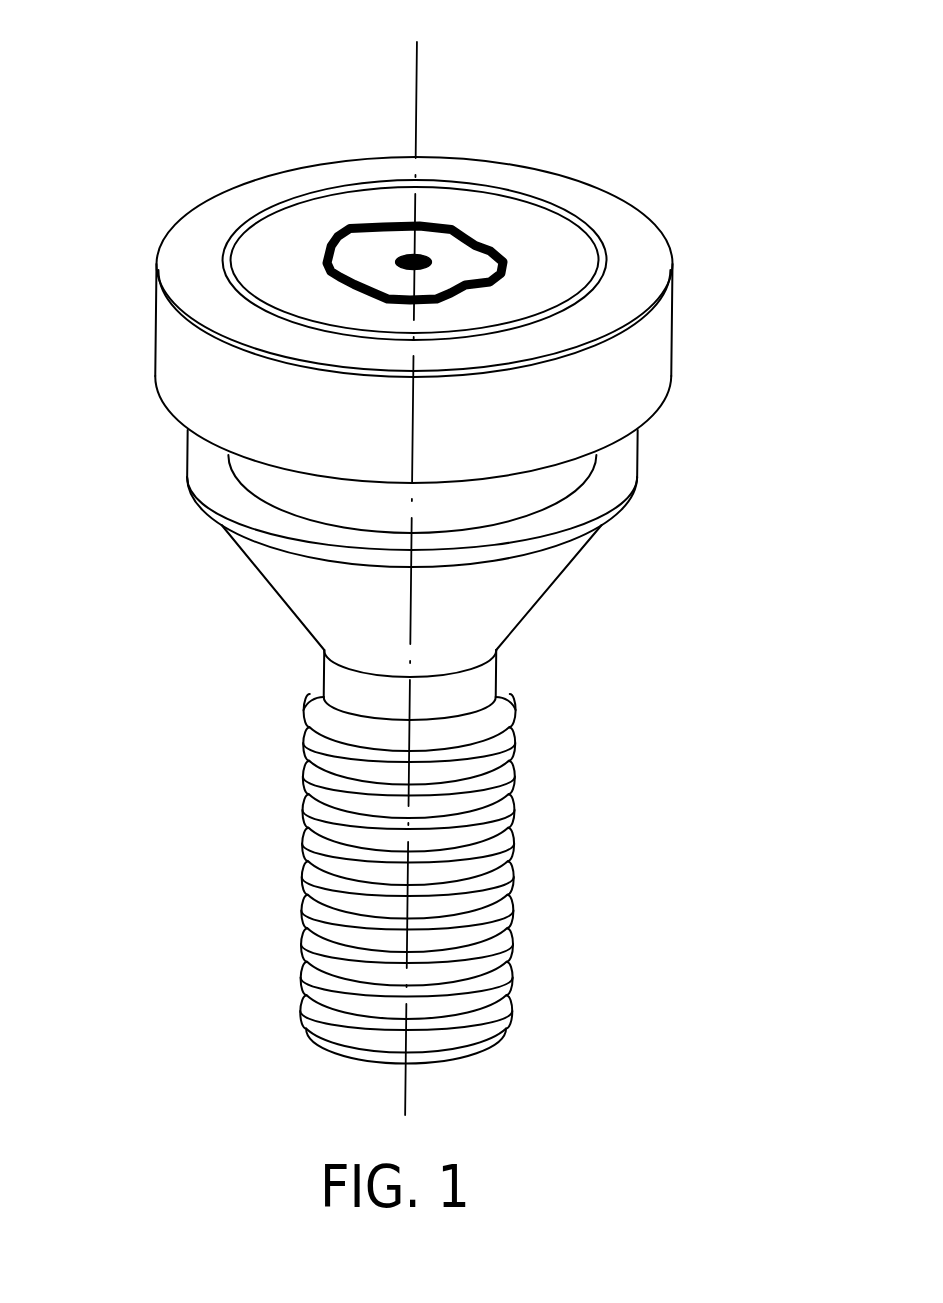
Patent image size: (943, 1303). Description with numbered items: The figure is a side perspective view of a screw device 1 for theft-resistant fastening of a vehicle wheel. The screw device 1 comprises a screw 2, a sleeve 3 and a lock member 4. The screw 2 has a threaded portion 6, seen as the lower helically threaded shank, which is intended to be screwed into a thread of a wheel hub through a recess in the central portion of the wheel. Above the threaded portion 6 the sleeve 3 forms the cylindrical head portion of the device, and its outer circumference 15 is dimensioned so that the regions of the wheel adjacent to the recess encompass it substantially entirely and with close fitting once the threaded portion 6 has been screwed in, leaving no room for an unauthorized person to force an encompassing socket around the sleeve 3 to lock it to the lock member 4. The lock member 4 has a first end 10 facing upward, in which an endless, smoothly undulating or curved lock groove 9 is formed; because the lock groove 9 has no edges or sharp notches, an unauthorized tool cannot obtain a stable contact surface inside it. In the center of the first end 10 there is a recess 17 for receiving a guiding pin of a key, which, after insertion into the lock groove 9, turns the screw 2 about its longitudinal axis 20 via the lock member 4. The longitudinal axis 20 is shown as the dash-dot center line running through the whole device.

The screw device 1 is at (587, 102).
The screw 2 is at (573, 816).
The sleeve 3 is at (195, 213).
The lock member 4 is at (285, 207).
The threaded portion 6 is at (503, 947).
The lock groove 9 is at (460, 222).
The first end 10 is at (540, 240).
The circumference 15 is at (668, 270).
The recess 17 is at (418, 253).
The longitudinal axis 20 is at (408, 1083).